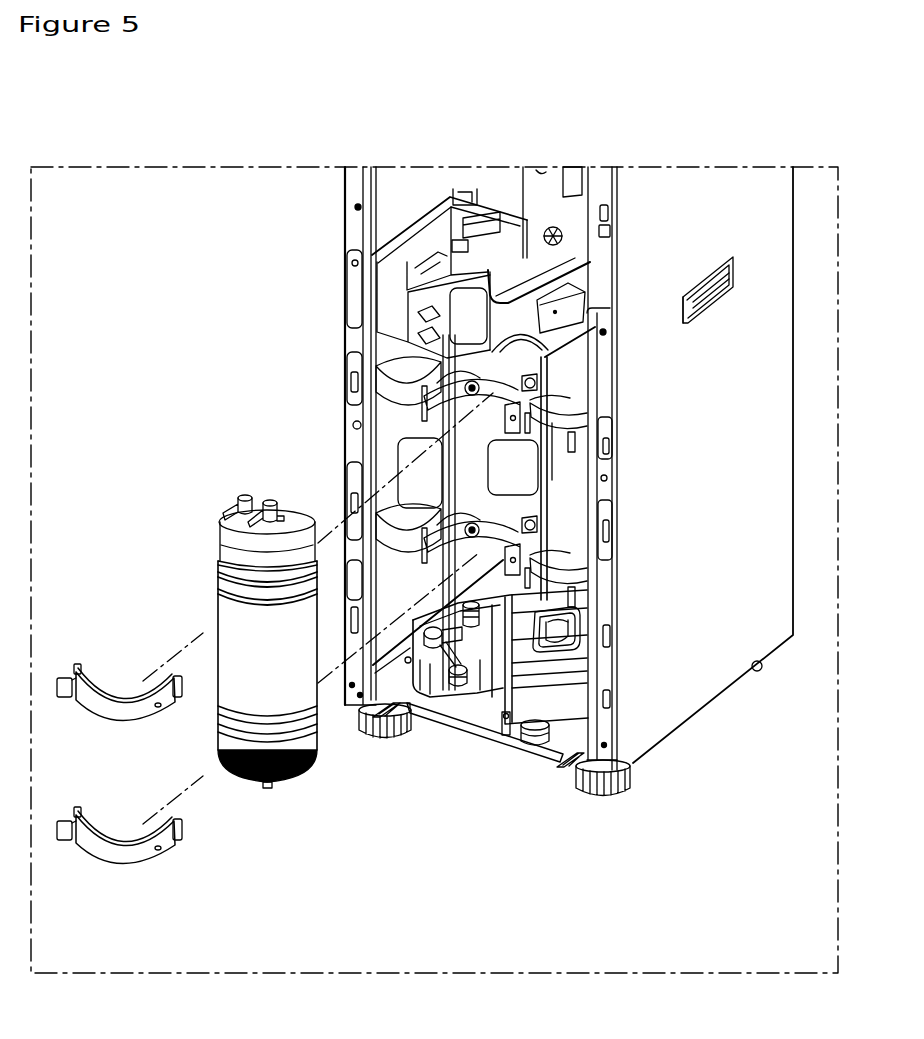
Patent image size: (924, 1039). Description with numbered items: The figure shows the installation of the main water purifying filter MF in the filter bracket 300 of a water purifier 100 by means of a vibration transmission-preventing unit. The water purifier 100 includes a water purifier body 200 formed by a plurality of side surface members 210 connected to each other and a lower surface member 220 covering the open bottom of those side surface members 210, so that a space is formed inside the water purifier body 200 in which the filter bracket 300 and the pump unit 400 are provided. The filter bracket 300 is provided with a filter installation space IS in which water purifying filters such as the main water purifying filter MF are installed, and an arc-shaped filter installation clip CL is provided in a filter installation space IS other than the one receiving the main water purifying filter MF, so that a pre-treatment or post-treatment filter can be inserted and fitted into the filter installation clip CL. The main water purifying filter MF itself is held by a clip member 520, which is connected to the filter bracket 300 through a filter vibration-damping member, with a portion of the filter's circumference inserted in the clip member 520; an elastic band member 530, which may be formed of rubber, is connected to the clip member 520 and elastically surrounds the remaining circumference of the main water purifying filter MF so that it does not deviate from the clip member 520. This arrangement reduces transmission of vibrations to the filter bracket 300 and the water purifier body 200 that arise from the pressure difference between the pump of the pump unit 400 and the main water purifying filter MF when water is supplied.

The water purifier 100 is at (263, 101).
The water purifier body 200 is at (808, 300).
The side surface member 210 is at (720, 403).
The lower surface member 220 is at (505, 746).
The filter bracket 300 is at (386, 297).
The pump unit 400 is at (430, 718).
The clip member 520 is at (401, 411).
The elastic band member 530 is at (113, 666).
The filter installation space IS is at (515, 472).
The filter installation clip CL is at (567, 571).
The main water purifying filter MF is at (293, 805).